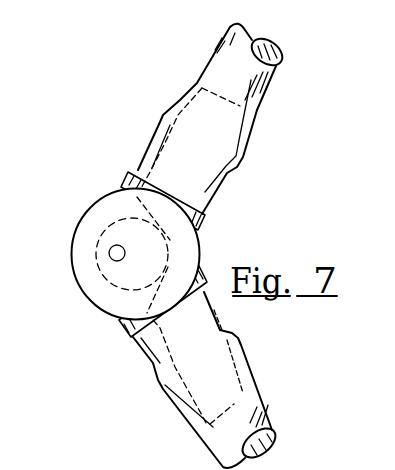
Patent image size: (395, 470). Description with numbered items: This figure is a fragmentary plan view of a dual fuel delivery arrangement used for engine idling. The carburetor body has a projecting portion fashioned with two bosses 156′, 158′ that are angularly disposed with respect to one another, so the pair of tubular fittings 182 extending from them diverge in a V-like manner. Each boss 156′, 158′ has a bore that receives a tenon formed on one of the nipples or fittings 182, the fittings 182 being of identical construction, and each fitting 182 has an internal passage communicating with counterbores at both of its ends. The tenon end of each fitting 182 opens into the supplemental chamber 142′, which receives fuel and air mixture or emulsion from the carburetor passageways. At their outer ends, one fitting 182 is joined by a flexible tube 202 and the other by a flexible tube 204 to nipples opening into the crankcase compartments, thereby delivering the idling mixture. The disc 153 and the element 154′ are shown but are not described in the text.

The nipple or fitting 182 is at (239, 246).
The flexible tube 204 is at (275, 73).
The flexible tube 202 is at (270, 423).
The boss 156′ is at (201, 214).
The boss 158′ is at (131, 337).
The disc 153 is at (89, 211).
The supplemental chamber 142′ is at (180, 247).
The pivot pin 154′ is at (107, 244).